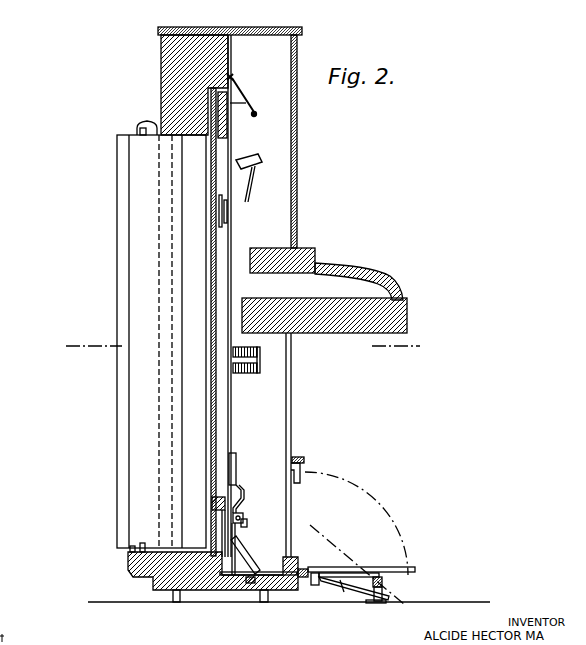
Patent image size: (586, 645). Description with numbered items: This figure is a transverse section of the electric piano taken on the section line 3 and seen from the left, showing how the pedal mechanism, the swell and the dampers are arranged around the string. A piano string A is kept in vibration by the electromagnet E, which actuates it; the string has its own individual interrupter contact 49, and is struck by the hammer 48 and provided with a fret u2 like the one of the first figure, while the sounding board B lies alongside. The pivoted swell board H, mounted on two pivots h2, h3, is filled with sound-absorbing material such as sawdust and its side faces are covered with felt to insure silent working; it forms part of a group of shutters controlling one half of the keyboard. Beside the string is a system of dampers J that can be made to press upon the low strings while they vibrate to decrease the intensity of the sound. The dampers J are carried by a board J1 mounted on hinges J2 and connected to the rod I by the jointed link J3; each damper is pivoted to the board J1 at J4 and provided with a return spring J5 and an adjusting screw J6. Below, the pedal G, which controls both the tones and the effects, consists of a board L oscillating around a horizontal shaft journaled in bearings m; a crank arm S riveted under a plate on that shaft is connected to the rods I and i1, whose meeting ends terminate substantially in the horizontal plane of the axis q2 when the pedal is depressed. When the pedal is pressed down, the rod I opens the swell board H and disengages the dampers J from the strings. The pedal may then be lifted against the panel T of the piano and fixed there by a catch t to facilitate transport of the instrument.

The section line 3 is at (64, 345).
The pivoted swell board H is at (124, 203).
The pivot h2 is at (143, 122).
The pivot h3 is at (140, 547).
The sounding board B is at (217, 163).
The piano string A is at (232, 247).
The individual interrupter contact 49 is at (254, 112).
The hammer 48 is at (251, 183).
The fret u2 is at (233, 221).
The electromagnet E is at (252, 374).
The panel T is at (292, 371).
The catch t is at (299, 458).
The damper J is at (239, 456).
The return spring J5 is at (241, 501).
The damper pivot J4 is at (244, 515).
The adjusting screw J6 is at (247, 523).
The jointed link J3 is at (258, 556).
The damper board J1 is at (233, 553).
The hinge J2 is at (248, 587).
The connecting rod I is at (277, 573).
The pedal G is at (417, 570).
The axis q2 is at (314, 567).
The pedal board L is at (369, 572).
The bearing m is at (381, 577).
The crank arm S is at (397, 593).
The connecting rod i1 is at (343, 585).